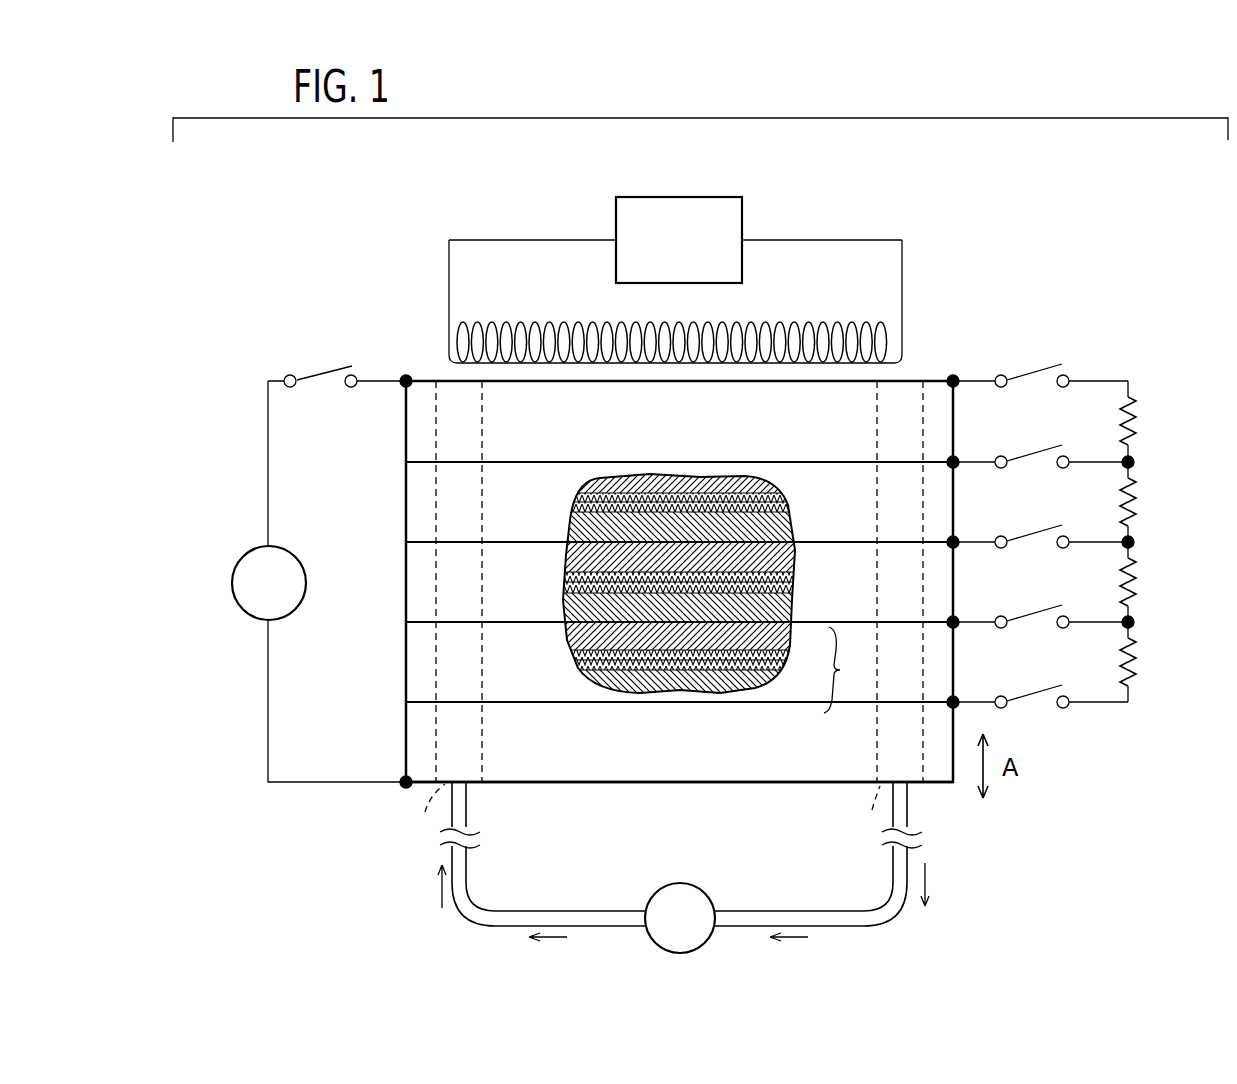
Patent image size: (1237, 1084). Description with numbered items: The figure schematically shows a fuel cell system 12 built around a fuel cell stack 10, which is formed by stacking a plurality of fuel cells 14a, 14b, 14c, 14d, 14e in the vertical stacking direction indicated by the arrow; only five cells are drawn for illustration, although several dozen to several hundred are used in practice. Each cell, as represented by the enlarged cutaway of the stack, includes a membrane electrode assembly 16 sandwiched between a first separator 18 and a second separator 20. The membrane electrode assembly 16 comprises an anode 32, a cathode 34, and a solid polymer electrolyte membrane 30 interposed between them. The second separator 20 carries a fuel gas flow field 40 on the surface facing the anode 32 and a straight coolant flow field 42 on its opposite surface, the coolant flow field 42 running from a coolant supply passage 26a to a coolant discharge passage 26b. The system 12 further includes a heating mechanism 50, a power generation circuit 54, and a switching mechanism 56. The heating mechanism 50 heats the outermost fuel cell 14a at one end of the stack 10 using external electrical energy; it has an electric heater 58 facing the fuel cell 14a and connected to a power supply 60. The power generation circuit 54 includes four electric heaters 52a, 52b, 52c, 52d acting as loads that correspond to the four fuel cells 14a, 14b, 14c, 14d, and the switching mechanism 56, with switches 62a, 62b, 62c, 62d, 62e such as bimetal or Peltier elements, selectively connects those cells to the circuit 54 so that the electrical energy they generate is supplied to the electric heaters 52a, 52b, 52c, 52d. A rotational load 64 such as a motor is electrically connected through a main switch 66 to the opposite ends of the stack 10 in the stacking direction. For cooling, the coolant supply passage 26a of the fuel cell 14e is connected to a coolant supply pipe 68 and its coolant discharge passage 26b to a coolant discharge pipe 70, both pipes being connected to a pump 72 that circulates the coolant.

The fuel cell stack 10 is at (940, 343).
The fuel cell system 12 is at (947, 217).
The fuel cell 14a is at (498, 428).
The fuel cell 14b is at (466, 516).
The fuel cell 14c is at (469, 595).
The fuel cell 14d is at (498, 672).
The fuel cell 14e is at (498, 743).
The membrane electrode assembly 16 is at (850, 670).
The first separator 18 is at (674, 572).
The second separator 20 is at (645, 483).
The coolant supply passage 26a is at (421, 811).
The coolant discharge passage 26b is at (861, 809).
The solid polymer electrolyte membrane 30 is at (772, 662).
The anode 32 is at (775, 658).
The cathode 34 is at (566, 600).
The fuel gas flow field 40 is at (566, 570).
The coolant flow field 42 is at (566, 530).
The heating mechanism 50 is at (675, 253).
The electric heater 52a is at (1140, 413).
The electric heater 52b is at (1140, 493).
The electric heater 52c is at (1140, 577).
The electric heater 52d is at (1140, 657).
The power generation circuit 54 is at (1171, 510).
The switching mechanism 56 is at (1040, 561).
The electric heater 58 is at (818, 323).
The power supply 60 is at (719, 197).
The switch 62a is at (1026, 365).
The switch 62b is at (1026, 445).
The switch 62c is at (1026, 525).
The switch 62d is at (1026, 605).
The switch 62e is at (1026, 685).
The rotational load 64 is at (233, 583).
The main switch 66 is at (319, 365).
The coolant supply pipe 68 is at (467, 807).
The coolant discharge pipe 70 is at (910, 807).
The pump 72 is at (679, 883).